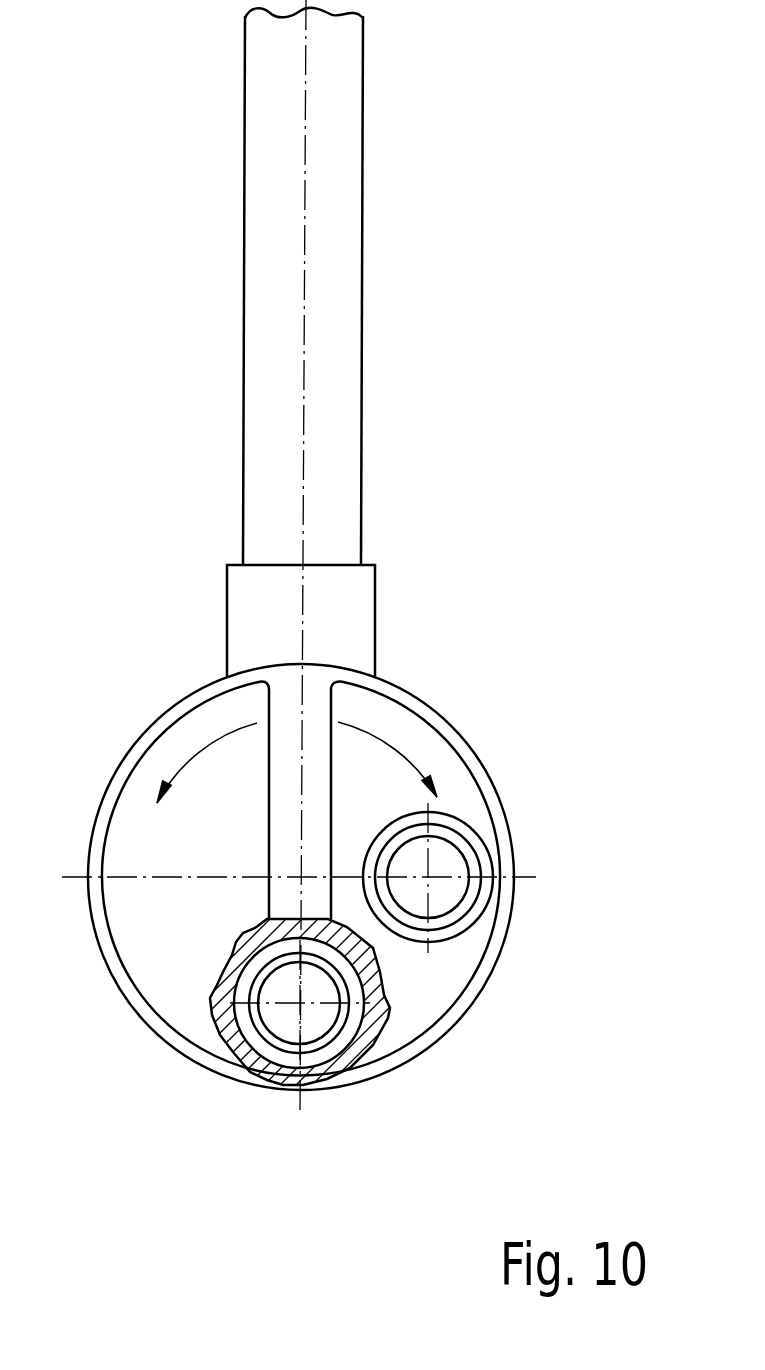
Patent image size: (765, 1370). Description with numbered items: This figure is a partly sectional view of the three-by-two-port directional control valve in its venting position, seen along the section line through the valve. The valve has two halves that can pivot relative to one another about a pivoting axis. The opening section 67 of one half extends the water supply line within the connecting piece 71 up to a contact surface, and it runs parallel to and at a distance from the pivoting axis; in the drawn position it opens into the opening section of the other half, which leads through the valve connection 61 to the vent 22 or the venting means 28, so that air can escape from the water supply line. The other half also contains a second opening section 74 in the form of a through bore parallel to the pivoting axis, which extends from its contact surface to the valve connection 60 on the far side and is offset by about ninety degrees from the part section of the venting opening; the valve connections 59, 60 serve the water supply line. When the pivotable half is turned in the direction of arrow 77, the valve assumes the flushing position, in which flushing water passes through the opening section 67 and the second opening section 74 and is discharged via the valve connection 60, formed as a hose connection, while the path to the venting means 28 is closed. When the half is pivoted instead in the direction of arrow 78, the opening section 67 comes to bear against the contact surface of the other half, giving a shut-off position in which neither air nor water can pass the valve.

The vent 22 is at (379, 286).
The venting means 28 is at (340, 338).
The valve connection 61 is at (342, 602).
The arrow 78 is at (185, 753).
The arrow 77 is at (417, 757).
The second opening section 74 is at (498, 862).
The valve connection 60 is at (440, 862).
The valve connection 59 is at (301, 1024).
The connecting piece 71 is at (243, 1022).
The opening section 67 is at (313, 1018).